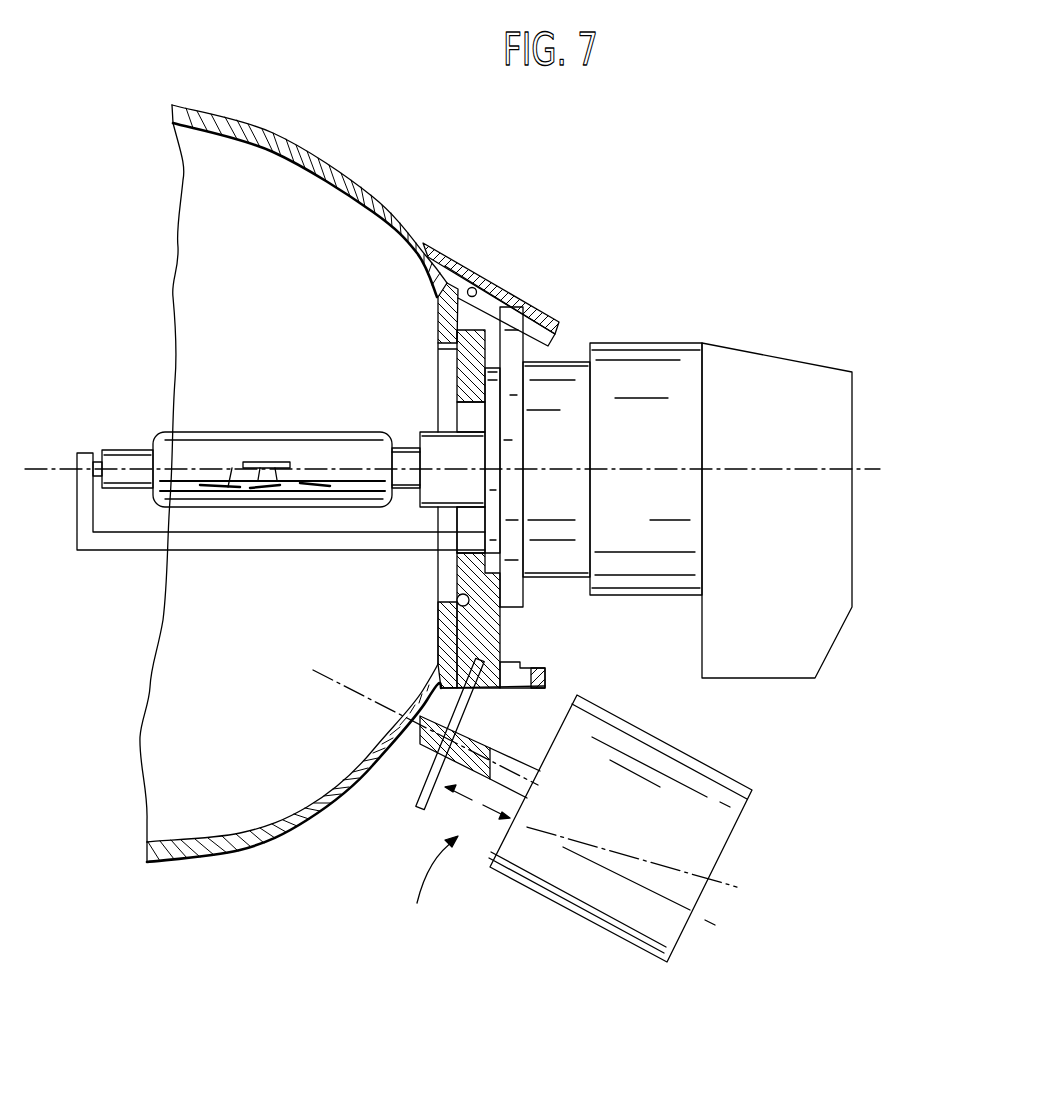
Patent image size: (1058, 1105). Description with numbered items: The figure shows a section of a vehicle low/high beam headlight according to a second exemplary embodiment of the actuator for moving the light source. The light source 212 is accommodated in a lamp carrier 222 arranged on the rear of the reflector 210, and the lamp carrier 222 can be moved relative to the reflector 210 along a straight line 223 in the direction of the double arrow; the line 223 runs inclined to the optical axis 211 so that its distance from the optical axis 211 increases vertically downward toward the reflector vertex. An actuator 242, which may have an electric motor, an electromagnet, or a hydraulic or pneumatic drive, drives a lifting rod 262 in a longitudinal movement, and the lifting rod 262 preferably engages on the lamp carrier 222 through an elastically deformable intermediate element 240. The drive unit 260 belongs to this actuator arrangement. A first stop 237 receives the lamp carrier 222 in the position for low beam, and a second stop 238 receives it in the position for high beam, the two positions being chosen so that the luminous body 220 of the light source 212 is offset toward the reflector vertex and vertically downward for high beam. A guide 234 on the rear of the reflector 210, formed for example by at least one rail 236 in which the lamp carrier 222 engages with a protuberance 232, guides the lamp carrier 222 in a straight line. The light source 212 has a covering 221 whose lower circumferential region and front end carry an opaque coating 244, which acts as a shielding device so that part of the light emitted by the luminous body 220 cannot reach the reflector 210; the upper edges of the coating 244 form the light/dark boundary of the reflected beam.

The reflector 210 is at (273, 132).
The optical axis 211 is at (70, 470).
The light source 212 is at (565, 431).
The luminous body 220 is at (323, 470).
The covering 221 is at (163, 440).
The lamp carrier 222 is at (438, 365).
The straight line 223 is at (332, 700).
The protuberance 232 is at (572, 230).
The guide 234 is at (555, 256).
The rail 236 is at (552, 306).
The first stop 237 is at (460, 596).
The second stop 238 is at (527, 677).
The elastically deformable intermediate element 240 is at (420, 792).
The actuator 242 is at (411, 884).
The opaque coating 244 is at (228, 487).
The drive module 260 is at (568, 898).
The lifting rod 262 is at (490, 747).